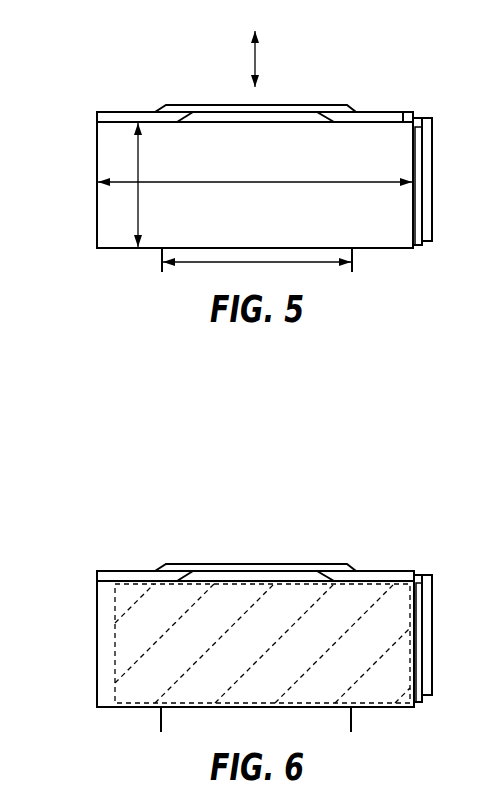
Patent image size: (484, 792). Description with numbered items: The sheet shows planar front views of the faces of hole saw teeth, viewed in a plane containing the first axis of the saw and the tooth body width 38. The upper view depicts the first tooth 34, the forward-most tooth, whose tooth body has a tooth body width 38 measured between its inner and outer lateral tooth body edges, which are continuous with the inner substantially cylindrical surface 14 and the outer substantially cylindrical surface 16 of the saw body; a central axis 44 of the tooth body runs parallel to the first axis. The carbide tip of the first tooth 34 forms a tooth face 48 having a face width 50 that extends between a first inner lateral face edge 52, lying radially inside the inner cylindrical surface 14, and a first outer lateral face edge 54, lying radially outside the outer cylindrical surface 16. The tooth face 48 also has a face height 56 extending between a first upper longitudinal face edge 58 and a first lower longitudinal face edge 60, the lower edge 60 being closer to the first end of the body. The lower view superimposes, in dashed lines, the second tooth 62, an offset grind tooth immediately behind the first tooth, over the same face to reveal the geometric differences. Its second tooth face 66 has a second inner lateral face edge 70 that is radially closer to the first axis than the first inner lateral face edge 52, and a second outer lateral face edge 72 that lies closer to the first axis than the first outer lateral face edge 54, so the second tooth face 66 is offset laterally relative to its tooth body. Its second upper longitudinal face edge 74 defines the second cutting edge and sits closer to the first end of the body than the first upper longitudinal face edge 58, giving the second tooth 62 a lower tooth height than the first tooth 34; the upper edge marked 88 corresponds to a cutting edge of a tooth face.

In FIG. 5, the inner substantially cylindrical surface 14 is at (352, 265).
In FIG. 6, the inner substantially cylindrical surface 14 is at (352, 724).
In FIG. 5, the outer substantially cylindrical surface 16 is at (161, 260).
In FIG. 6, the outer substantially cylindrical surface 16 is at (161, 715).
In FIG. 5, the first tooth 34 is at (121, 86).
In FIG. 5, the tooth body width 38 is at (190, 264).
In FIG. 5, the central axis of the tooth body 44 is at (252, 61).
In FIG. 5, the tooth face 48 is at (399, 132).
In FIG. 5, the face width 50 is at (118, 183).
In FIG. 5, the first inner lateral face edge 52 is at (416, 218).
In FIG. 5, the first outer lateral face edge 54 is at (97, 233).
In FIG. 5, the face height 56 is at (137, 145).
In FIG. 5, the first upper longitudinal face edge 58 is at (100, 112).
In FIG. 5, the first lower longitudinal face edge 60 is at (401, 248).
In FIG. 6, the second tooth 62 is at (157, 542).
In FIG. 6, the second tooth face 66 is at (376, 594).
In FIG. 6, the second inner lateral face edge 70 is at (422, 652).
In FIG. 6, the second outer lateral face edge 72 is at (115, 694).
In FIG. 6, the second upper longitudinal face edge 74 is at (133, 584).
In FIG. 6, the third upper longitudinal face edge 88 is at (240, 571).